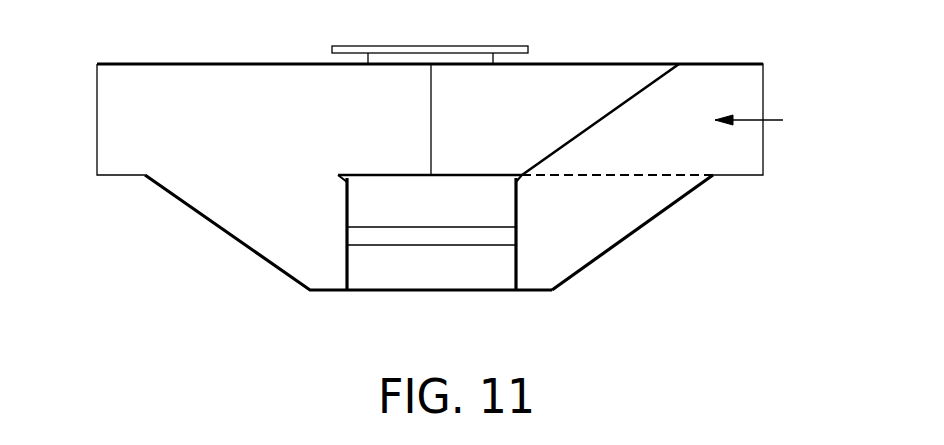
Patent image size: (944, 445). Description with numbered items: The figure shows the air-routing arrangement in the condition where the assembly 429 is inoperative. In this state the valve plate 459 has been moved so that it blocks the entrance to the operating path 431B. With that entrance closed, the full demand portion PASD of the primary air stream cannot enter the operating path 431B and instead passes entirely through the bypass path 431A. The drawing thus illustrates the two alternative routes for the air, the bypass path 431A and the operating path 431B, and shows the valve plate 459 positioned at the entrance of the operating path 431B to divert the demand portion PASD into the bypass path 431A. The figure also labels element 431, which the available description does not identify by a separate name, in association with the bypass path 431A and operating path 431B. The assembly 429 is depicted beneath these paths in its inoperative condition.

The housing body 431 is at (112, 63).
The bypass path 431A is at (540, 63).
The operating path 431B is at (637, 233).
The valve plate 459 is at (630, 103).
The assembly 429 is at (443, 292).
The demand portion of the primary air stream PASD is at (750, 118).